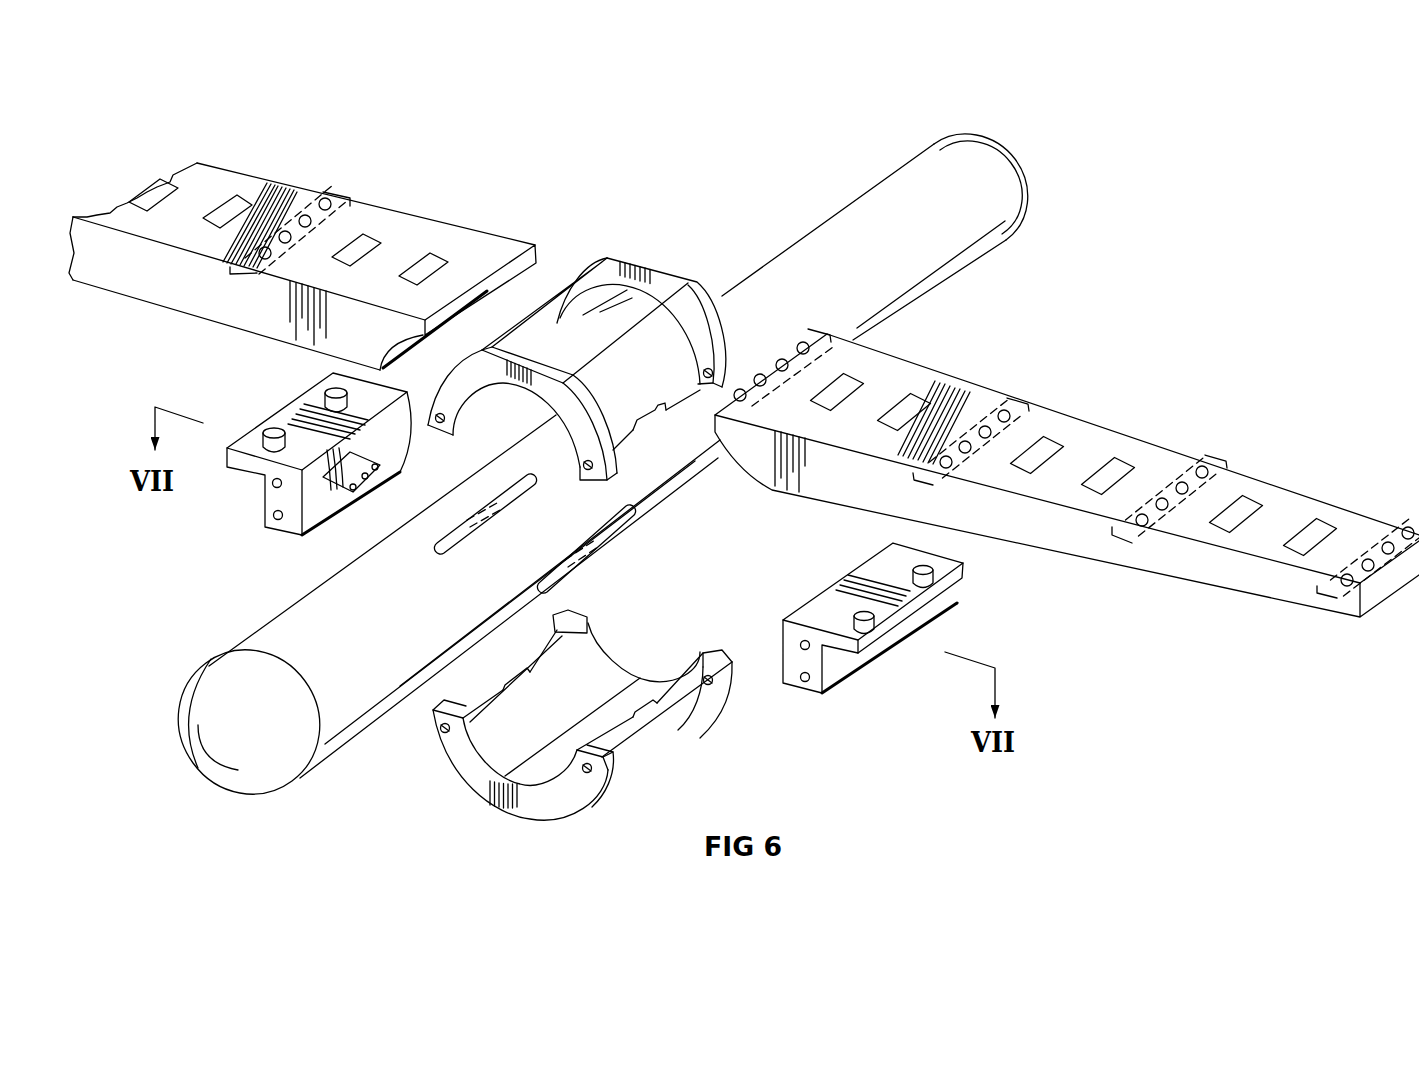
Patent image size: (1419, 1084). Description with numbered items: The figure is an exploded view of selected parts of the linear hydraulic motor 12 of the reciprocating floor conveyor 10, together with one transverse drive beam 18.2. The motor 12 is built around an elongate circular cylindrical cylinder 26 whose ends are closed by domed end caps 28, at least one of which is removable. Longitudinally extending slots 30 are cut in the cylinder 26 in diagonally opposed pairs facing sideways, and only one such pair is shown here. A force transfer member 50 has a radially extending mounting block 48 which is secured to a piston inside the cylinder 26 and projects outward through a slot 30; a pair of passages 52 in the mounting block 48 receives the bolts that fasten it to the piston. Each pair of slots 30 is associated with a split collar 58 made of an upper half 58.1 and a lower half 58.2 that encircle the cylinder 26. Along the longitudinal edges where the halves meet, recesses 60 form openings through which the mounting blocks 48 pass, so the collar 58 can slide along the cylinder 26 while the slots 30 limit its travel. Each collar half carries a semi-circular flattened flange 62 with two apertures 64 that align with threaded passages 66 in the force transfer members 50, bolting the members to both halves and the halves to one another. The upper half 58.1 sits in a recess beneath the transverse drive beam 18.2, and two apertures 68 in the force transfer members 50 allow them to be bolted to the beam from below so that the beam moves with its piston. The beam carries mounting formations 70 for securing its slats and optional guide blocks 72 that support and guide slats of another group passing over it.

The reciprocating floor conveyor 10 is at (1104, 162).
The linear hydraulic motor 12 is at (781, 225).
The transverse drive beam 18.2 is at (1073, 437).
The cylinder 26 is at (946, 304).
The end cap 28 is at (997, 163).
The slot 30 is at (618, 528).
The mounting block 48 is at (345, 474).
The force transfer member 50 is at (255, 504).
The passages 52 is at (373, 474).
The split collar 58 is at (465, 809).
The upper half 58.1 is at (650, 315).
The lower half 58.2 is at (507, 793).
The recess 60 is at (648, 417).
The semi-circular flattened flange 62 is at (682, 282).
The aperture 64 is at (552, 320).
The threaded passage 66 is at (273, 513).
The aperture 68 is at (267, 432).
The mounting formation 70 is at (336, 195).
The guide block 72 is at (363, 237).